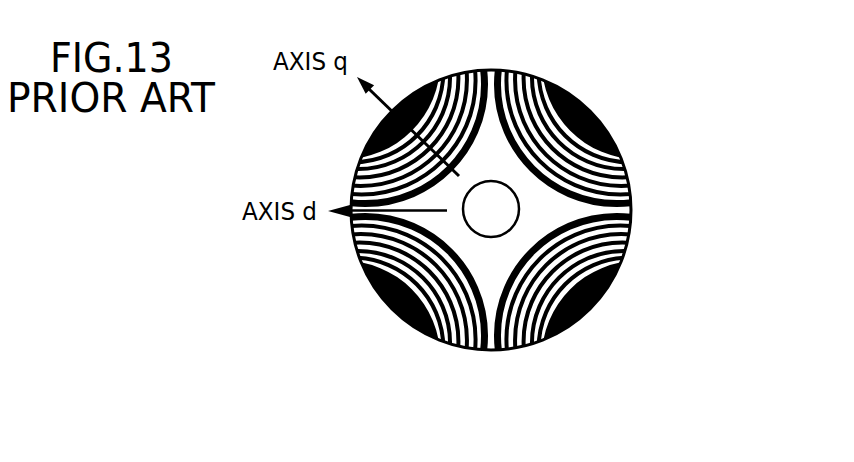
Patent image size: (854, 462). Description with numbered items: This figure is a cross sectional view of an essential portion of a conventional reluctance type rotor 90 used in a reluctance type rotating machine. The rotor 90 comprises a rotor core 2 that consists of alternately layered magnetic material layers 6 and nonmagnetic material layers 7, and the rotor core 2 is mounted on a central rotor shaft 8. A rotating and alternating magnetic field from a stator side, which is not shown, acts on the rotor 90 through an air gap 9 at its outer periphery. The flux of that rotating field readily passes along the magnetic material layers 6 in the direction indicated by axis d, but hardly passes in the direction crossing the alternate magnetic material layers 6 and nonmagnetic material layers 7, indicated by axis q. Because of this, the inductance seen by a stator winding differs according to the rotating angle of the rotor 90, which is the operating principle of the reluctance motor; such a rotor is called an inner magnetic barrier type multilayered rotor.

The reluctance type rotor 90 is at (490, 231).
The rotor core 2 is at (491, 198).
The magnetic material layer 6 is at (505, 287).
The nonmagnetic material layer 7 is at (612, 280).
The rotor shaft 8 is at (513, 210).
The air gap 9 is at (383, 318).